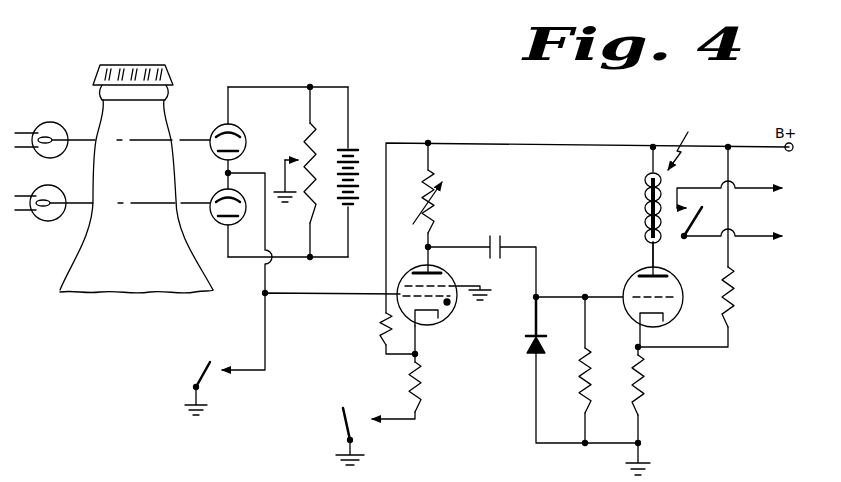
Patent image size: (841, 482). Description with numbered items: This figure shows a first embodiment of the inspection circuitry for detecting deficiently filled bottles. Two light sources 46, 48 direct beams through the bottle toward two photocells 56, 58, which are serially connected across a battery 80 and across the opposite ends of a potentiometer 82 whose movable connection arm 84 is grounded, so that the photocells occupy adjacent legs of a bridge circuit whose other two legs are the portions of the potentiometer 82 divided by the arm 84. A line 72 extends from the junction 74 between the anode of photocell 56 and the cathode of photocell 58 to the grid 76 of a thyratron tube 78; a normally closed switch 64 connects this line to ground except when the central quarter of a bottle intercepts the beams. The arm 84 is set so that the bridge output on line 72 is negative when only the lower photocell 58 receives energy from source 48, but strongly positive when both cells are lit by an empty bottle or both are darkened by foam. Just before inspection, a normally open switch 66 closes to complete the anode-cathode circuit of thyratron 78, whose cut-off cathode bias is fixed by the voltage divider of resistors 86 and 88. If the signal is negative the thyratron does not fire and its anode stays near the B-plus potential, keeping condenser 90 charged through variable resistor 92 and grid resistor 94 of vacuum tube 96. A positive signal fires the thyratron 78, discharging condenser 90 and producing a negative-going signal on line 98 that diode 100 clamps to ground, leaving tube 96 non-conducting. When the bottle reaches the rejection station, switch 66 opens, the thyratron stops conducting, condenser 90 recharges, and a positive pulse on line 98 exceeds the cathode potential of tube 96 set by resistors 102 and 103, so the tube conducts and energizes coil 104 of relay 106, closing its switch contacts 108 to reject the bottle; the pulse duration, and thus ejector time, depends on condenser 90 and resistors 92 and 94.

The light source 46 is at (67, 123).
The light source 48 is at (50, 222).
The photocell 56 is at (240, 128).
The photocell 58 is at (240, 222).
The switch 64 is at (194, 377).
The switch 66 is at (360, 428).
The line 72 is at (270, 290).
The junction 74 is at (226, 173).
The grid 76 is at (414, 270).
The thyratron tube 78 is at (445, 322).
The battery 80 is at (370, 152).
The potentiometer 82 is at (306, 133).
The movable connection arm 84 is at (287, 160).
The resistor 86 is at (375, 328).
The resistor 88 is at (405, 385).
The condenser 90 is at (498, 232).
The variable resistor 92 is at (442, 195).
The grid resistor 94 is at (588, 375).
The vacuum tube 96 is at (680, 283).
The line 98 is at (541, 290).
The diode 100 is at (525, 342).
The resistor 102 is at (745, 300).
The resistor 103 is at (655, 389).
The coil 104 is at (645, 200).
The relay 106 is at (693, 141).
The switch contacts 108 is at (705, 215).